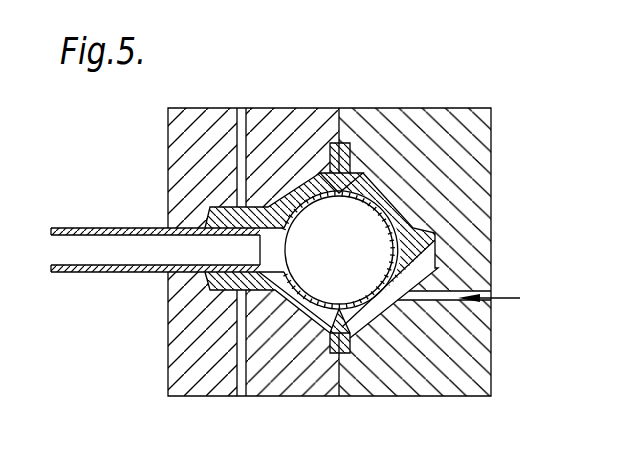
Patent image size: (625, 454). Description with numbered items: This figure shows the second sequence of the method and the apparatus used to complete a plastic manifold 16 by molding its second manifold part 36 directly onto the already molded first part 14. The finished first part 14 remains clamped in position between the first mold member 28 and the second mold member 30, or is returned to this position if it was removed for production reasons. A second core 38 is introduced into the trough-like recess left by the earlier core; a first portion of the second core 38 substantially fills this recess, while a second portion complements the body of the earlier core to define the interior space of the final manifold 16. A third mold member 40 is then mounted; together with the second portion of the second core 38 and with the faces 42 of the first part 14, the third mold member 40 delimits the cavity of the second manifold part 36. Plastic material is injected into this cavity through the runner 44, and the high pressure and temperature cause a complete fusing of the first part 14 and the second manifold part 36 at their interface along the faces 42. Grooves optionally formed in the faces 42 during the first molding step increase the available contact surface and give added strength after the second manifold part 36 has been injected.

The first part 14 is at (297, 199).
The plastic manifold 16 is at (372, 328).
The first mold member 28 is at (183, 175).
The second mold member 30 is at (177, 356).
The second manifold part 36 is at (395, 212).
The second core 38 is at (390, 183).
The third mold member 40 is at (470, 372).
The faces 42 is at (331, 163).
The runner 44 is at (457, 293).